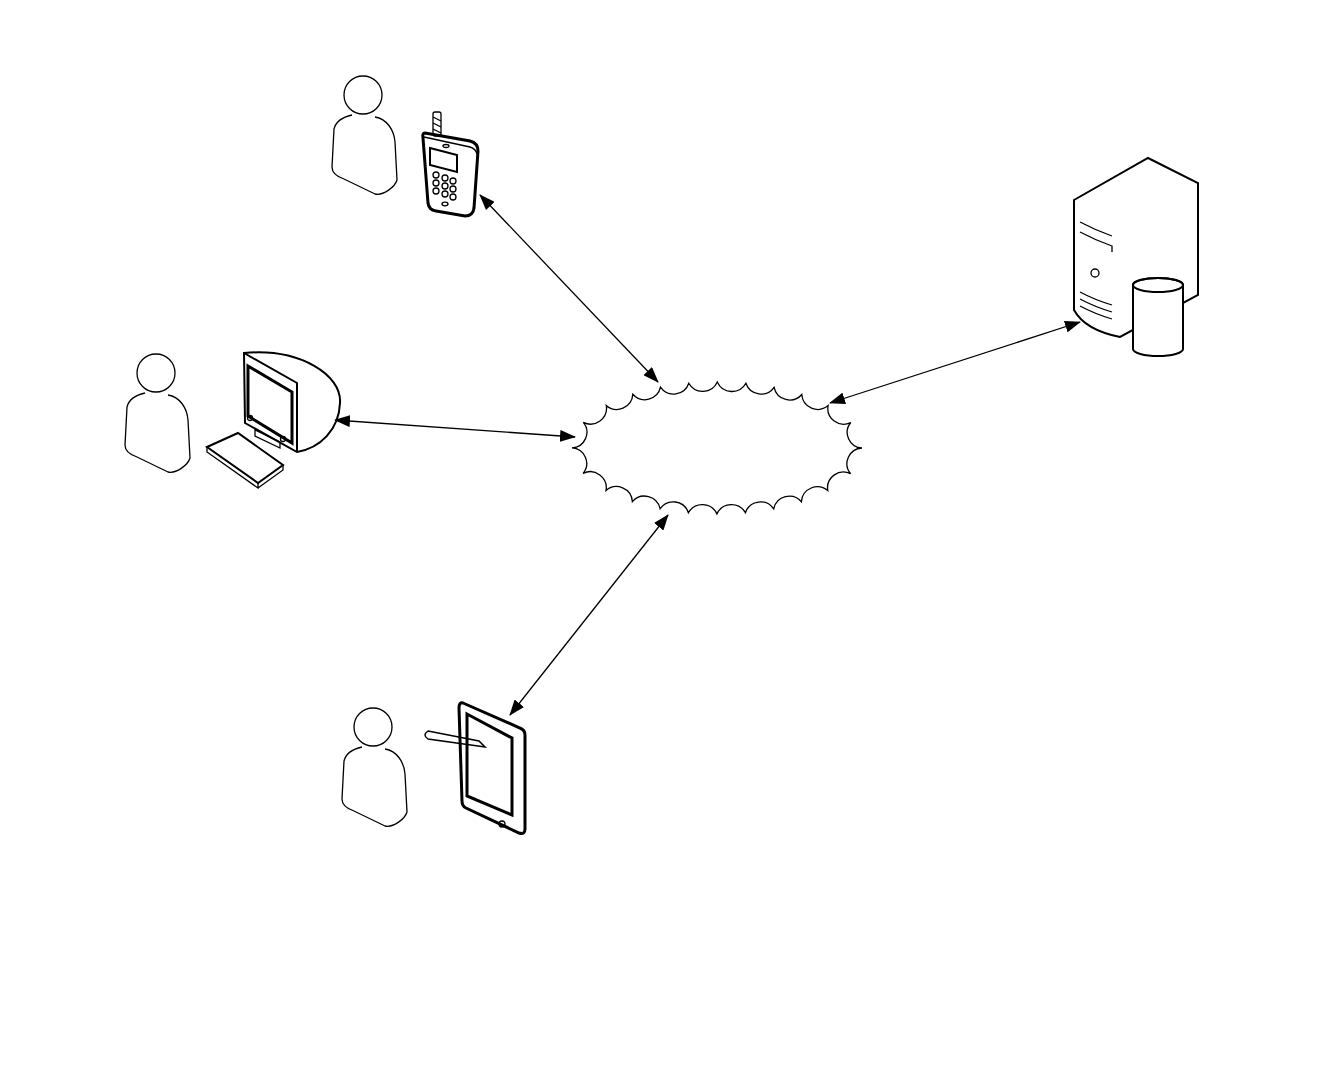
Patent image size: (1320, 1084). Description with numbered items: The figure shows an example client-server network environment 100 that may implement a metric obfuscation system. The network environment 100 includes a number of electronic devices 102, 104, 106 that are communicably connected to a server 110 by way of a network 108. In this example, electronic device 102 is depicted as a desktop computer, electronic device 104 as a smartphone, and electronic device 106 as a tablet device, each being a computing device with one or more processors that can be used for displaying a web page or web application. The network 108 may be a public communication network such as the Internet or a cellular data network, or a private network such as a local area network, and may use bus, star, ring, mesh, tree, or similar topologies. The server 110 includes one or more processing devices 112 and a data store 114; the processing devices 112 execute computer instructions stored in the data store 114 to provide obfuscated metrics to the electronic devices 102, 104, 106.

The network environment 100 is at (841, 130).
The electronic device 102 is at (462, 132).
The electronic device 104 is at (300, 360).
The electronic device 106 is at (473, 700).
The network 108 is at (720, 381).
The server 110 is at (1078, 353).
The processing devices 112 is at (1173, 167).
The data store 114 is at (1185, 333).